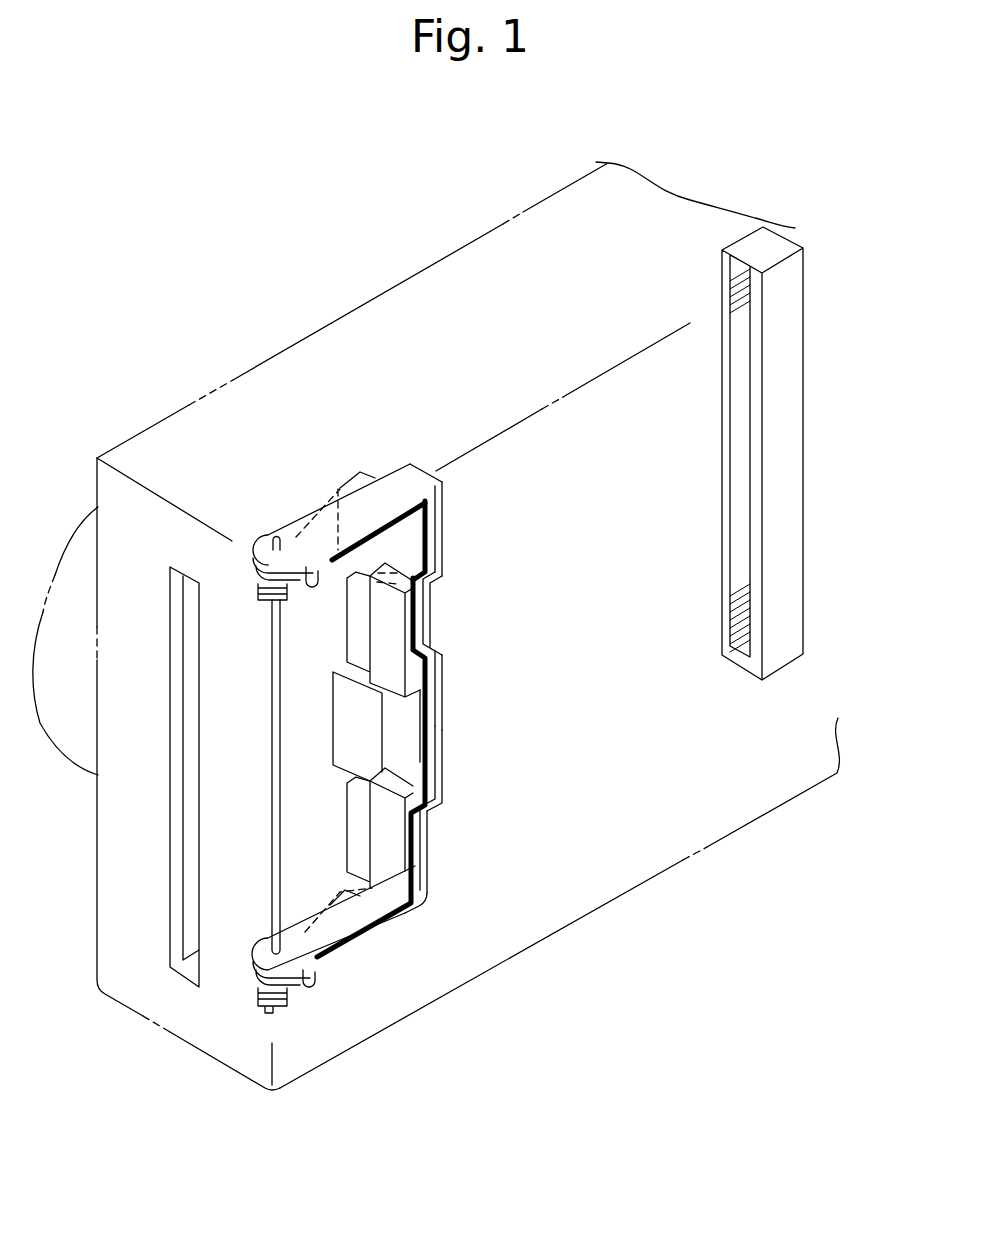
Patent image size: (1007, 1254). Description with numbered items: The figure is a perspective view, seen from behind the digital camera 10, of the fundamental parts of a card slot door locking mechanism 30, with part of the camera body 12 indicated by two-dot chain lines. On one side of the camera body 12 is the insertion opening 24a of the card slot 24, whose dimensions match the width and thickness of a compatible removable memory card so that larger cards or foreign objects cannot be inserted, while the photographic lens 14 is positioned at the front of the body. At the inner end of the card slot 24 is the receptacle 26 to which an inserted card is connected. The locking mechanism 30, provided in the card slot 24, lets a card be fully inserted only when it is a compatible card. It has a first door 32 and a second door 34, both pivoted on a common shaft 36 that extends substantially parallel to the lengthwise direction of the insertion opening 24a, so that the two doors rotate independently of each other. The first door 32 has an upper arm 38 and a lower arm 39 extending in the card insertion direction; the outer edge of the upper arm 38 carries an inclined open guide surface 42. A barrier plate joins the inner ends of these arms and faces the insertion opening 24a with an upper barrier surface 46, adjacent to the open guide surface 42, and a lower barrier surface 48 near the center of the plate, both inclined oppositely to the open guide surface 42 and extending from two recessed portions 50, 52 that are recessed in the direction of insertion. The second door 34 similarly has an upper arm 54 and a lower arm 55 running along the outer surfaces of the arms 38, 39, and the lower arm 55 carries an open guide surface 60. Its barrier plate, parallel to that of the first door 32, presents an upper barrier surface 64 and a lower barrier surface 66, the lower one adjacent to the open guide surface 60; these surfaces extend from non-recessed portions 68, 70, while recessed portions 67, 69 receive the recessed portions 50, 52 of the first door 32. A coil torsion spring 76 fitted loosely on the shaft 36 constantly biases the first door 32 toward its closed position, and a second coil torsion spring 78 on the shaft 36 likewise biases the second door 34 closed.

The digital camera 10 is at (93, 328).
The camera body 12 is at (287, 357).
The photographic lens 14 is at (80, 545).
The card slot 24 is at (227, 573).
The insertion opening 24a is at (184, 888).
The receptacle 26 is at (780, 668).
The card slot door locking mechanism 30 is at (458, 877).
The first door 32 is at (370, 467).
The second door 34 is at (416, 924).
The shaft 36 is at (271, 722).
The upper arm 38 is at (328, 564).
The lower arm 39 is at (298, 932).
The open guide surface 42 is at (316, 498).
The upper barrier surface 46 is at (373, 556).
The lower barrier surface 48 is at (350, 733).
The recessed portion 50 is at (425, 576).
The recessed portion 52 is at (428, 753).
The upper arm 54 is at (413, 496).
The lower arm 55 is at (333, 968).
The open guide surface 60 is at (357, 948).
The upper barrier surface 64 is at (358, 637).
The lower barrier surface 66 is at (358, 832).
The recessed portion 67 is at (441, 508).
The non-recessed portion 68 is at (426, 632).
The recessed portion 69 is at (438, 711).
The non-recessed portion 70 is at (430, 839).
The coil torsion spring 76 is at (263, 600).
The coil torsion spring 78 is at (258, 1009).